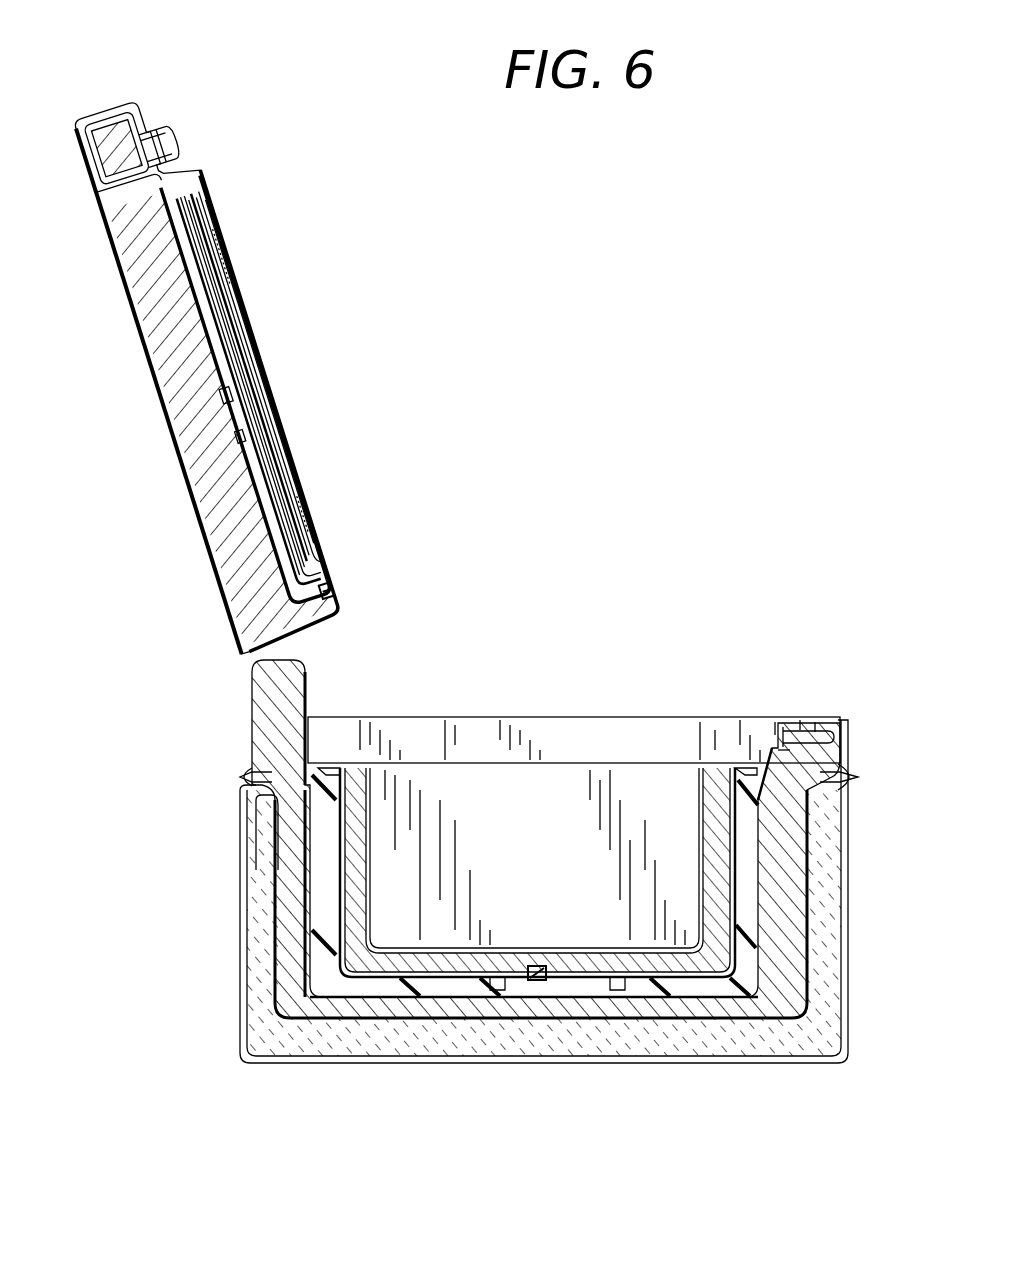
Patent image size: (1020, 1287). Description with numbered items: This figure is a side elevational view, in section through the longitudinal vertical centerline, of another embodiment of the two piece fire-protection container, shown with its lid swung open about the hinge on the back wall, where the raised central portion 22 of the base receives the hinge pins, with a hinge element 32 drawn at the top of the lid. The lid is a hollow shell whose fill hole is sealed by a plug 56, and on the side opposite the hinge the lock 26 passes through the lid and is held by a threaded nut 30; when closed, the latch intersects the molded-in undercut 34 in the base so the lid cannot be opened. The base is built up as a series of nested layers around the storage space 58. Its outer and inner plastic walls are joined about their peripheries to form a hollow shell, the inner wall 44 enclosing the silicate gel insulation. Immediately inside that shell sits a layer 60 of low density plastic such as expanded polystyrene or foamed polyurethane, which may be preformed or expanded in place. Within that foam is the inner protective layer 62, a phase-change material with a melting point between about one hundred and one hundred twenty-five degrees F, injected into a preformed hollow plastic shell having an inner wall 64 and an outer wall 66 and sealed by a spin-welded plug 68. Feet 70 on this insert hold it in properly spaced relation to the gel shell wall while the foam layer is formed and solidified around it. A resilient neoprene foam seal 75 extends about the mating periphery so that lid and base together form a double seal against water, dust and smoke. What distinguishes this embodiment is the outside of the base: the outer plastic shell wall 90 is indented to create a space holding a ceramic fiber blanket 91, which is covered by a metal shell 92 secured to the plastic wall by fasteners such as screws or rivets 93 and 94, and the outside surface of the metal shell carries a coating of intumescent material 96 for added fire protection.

The raised central portion 22 is at (330, 677).
The lock 26 is at (95, 180).
The threaded nut 30 is at (142, 118).
The hinge pin 32 is at (175, 160).
The molded-in undercut 34 is at (760, 730).
The plug 56 is at (208, 385).
The container interior cavity 58 is at (540, 795).
The low density plastic layer 60 is at (330, 875).
The inner wall 44 is at (338, 833).
The inner protective layer 62 is at (703, 795).
The inner wall 64 is at (495, 947).
The outer wall 66 is at (620, 968).
The spin-welded plug 68 is at (537, 968).
The feet 70 is at (406, 977).
The foam seal 75 is at (755, 775).
The outer plastic shell wall 90 is at (263, 850).
The ceramic fiber blanket 91 is at (320, 1037).
The metal shell 92 is at (445, 1035).
The fastener 93 is at (238, 775).
The fastener 94 is at (852, 778).
The intumescent material coating 96 is at (537, 1066).